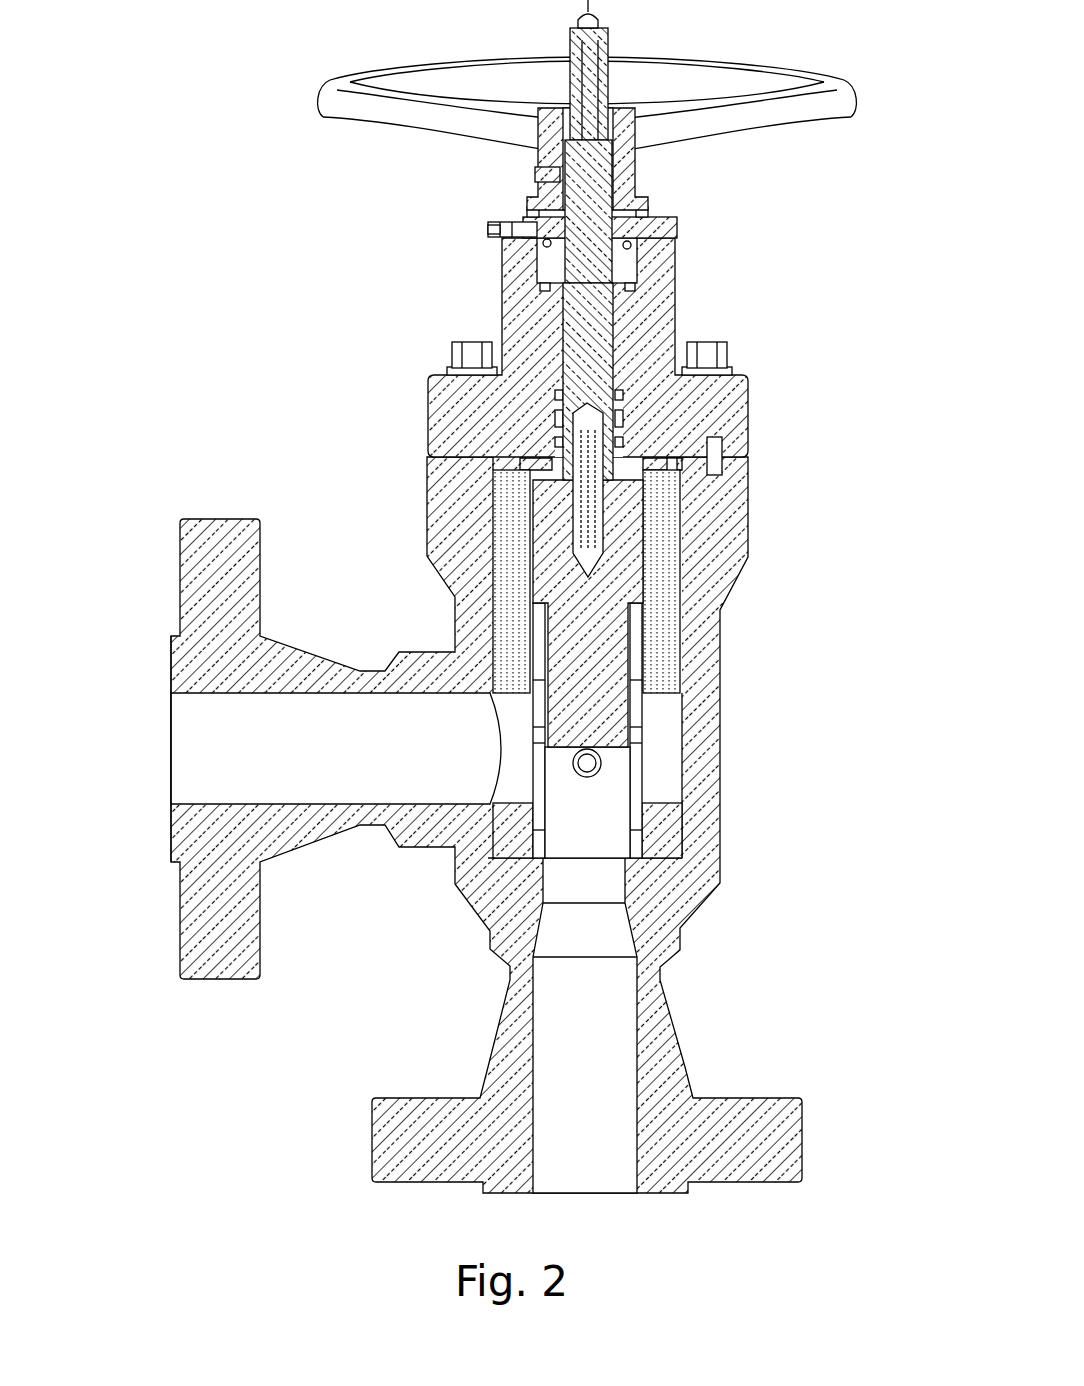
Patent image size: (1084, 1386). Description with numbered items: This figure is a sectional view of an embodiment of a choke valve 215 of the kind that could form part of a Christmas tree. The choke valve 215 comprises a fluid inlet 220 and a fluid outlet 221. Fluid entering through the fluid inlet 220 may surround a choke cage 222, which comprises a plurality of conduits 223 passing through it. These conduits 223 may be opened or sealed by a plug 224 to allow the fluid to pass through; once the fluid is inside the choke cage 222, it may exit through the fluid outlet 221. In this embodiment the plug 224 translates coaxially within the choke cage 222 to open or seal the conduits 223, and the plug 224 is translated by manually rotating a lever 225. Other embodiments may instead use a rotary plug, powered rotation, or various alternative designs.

The choke valve 215 is at (185, 196).
The fluid inlet 220 is at (168, 757).
The fluid outlet 221 is at (597, 1194).
The choke cage 222 is at (637, 795).
The conduits 223 is at (587, 770).
The plug 224 is at (583, 622).
The lever 225 is at (727, 126).